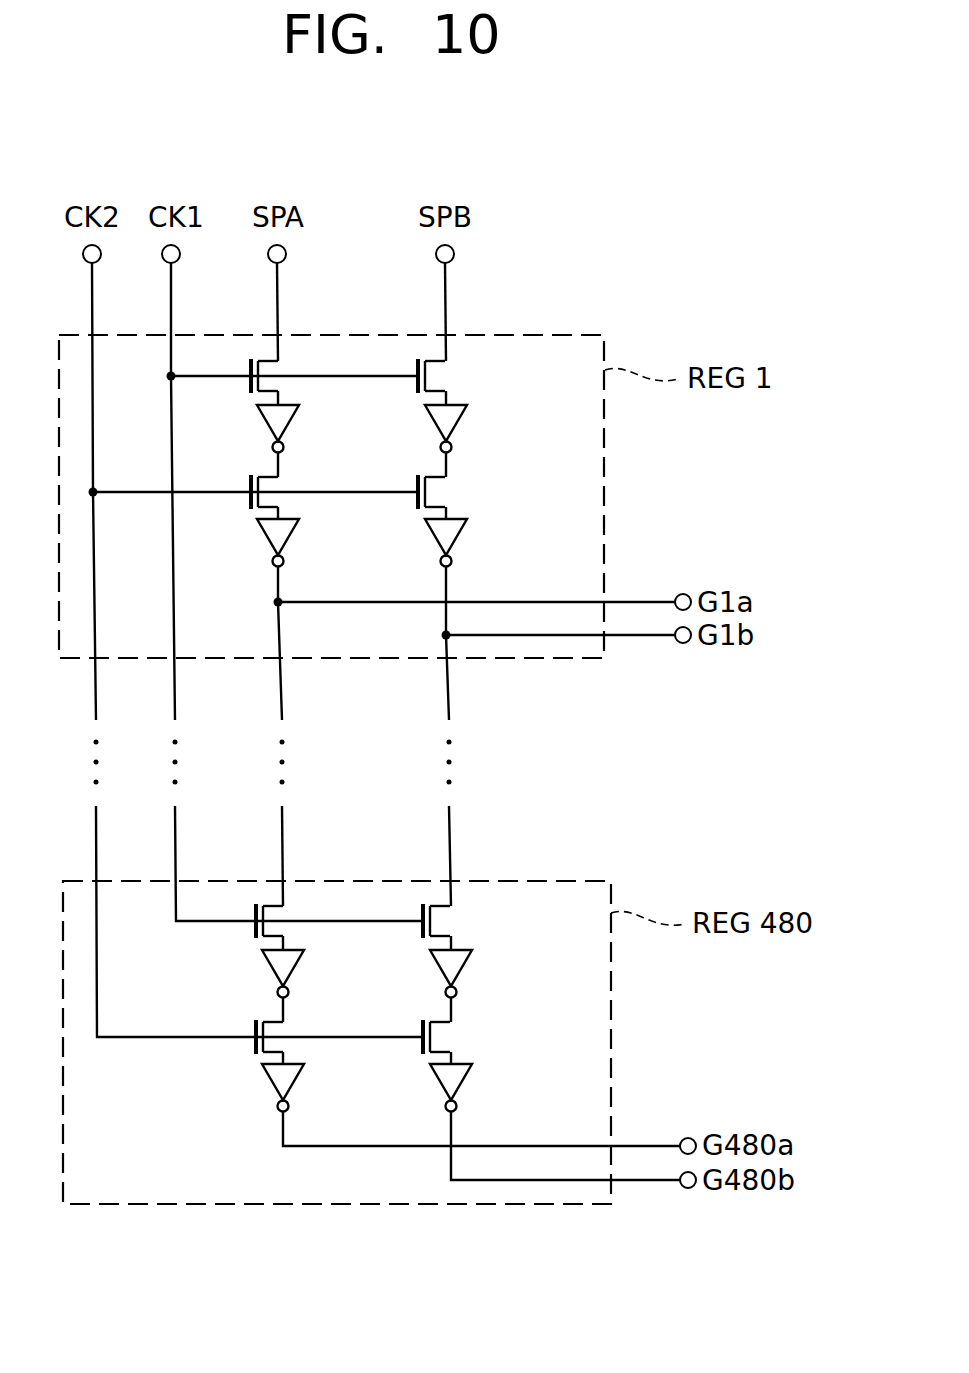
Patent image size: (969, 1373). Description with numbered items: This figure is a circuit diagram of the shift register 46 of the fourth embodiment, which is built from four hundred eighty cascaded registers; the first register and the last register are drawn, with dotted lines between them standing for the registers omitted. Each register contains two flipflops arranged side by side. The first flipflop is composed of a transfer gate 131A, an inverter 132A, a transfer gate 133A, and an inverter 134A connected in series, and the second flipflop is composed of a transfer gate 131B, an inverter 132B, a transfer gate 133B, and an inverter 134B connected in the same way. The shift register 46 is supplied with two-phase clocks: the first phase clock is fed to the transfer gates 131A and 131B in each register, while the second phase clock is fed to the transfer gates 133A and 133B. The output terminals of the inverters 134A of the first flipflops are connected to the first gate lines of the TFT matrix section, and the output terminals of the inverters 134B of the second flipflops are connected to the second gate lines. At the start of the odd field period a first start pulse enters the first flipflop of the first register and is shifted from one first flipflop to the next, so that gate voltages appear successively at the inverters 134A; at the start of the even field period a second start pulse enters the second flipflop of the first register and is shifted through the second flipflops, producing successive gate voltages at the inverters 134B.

The shift register 46 is at (612, 280).
The transfer gate 131A is at (281, 383).
The transfer gate 131B is at (447, 375).
The inverter 132A is at (292, 425).
The inverter 132B is at (460, 425).
The transfer gate 133A is at (281, 499).
The transfer gate 133B is at (448, 490).
The inverter 134A is at (290, 545).
The inverter 134B is at (457, 543).